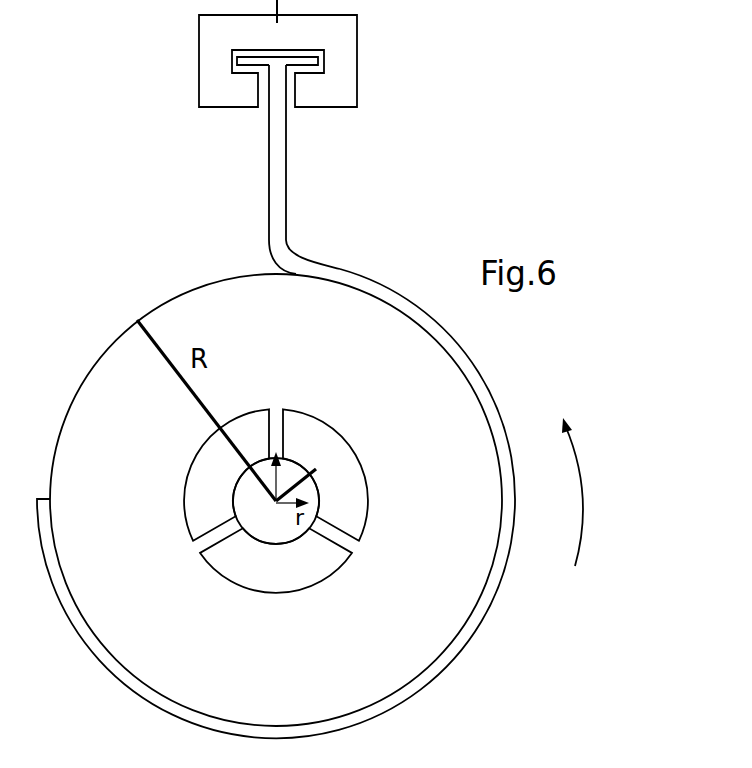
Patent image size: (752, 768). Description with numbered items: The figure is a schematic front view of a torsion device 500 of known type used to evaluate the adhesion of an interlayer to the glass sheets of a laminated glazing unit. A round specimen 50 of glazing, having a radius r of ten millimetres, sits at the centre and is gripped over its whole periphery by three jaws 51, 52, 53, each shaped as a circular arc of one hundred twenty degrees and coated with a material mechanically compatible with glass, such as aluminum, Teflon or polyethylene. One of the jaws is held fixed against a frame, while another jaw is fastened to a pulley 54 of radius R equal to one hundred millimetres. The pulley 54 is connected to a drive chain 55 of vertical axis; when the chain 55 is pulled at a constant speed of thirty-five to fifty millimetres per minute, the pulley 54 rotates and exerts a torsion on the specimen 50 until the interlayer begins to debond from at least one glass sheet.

The torsion device 500 is at (157, 212).
The round specimen 50 is at (282, 532).
The jaw 51 is at (195, 482).
The jaw 52 is at (352, 482).
The jaw 53 is at (258, 570).
The pulley 54 is at (72, 396).
The drive chain 55 is at (278, 152).